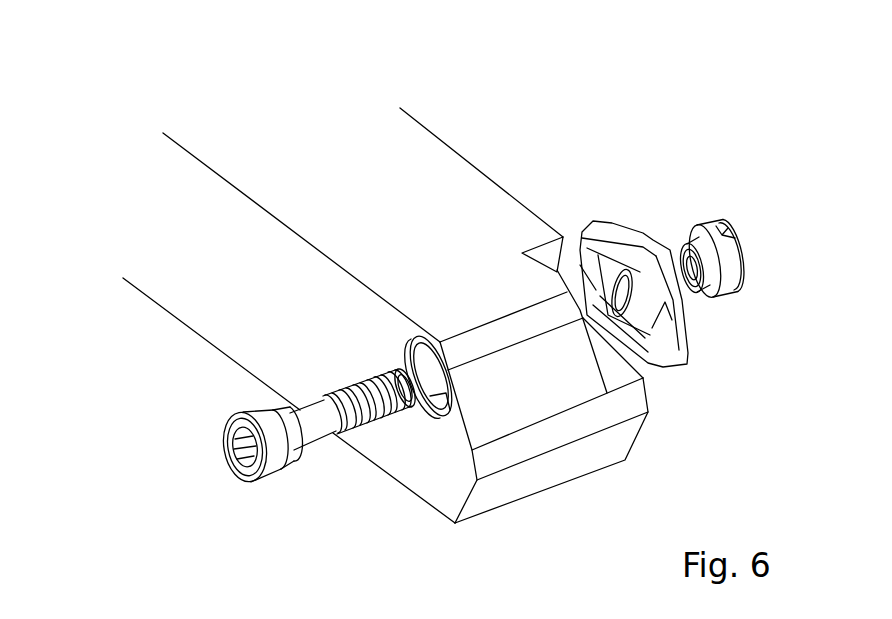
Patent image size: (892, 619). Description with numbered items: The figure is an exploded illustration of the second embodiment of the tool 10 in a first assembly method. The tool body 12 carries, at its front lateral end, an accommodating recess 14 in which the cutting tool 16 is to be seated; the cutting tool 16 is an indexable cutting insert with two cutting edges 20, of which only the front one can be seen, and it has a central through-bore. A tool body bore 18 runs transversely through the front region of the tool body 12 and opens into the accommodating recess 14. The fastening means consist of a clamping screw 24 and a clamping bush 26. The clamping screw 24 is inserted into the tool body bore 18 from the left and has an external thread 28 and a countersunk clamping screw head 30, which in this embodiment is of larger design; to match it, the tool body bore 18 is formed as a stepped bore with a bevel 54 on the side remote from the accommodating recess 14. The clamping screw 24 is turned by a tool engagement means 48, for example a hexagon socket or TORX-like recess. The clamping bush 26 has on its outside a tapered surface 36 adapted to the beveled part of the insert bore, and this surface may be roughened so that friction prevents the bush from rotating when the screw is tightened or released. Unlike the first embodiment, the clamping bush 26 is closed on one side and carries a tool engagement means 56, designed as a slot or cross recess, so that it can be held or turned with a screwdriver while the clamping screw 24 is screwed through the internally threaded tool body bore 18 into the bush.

The tool 10 is at (341, 163).
The tool body 12 is at (253, 307).
The accommodating recess 14 is at (606, 367).
The cutting tool 16 is at (611, 213).
The tool body bore 18 is at (445, 400).
The cutting edge 20 is at (677, 263).
The clamping screw 24 is at (283, 407).
The clamping bush 26 is at (711, 216).
The external thread 28 is at (370, 428).
The clamping screw head 30 is at (273, 462).
The tapered surface 36 is at (721, 291).
The tool engagement means 48 is at (230, 460).
The bevel 54 is at (428, 410).
The tool engagement means 56 is at (730, 232).